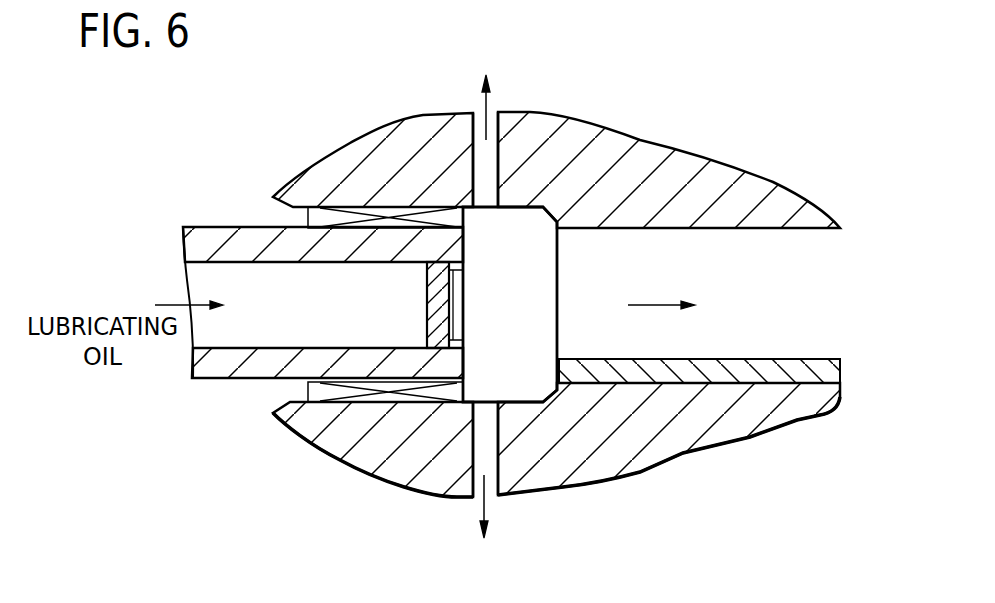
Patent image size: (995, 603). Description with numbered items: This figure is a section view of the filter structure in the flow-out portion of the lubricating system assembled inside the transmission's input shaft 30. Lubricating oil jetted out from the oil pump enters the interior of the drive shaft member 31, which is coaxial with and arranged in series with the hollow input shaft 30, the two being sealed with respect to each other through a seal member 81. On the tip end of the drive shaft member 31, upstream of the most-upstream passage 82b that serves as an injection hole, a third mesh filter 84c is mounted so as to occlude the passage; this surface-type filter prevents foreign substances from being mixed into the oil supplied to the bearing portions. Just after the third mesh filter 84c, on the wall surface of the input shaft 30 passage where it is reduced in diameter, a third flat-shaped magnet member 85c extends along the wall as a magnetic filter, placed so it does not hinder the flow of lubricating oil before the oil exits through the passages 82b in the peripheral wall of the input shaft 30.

The input shaft 30 is at (633, 147).
The drive shaft member 31 is at (243, 370).
The seal member 81 is at (385, 394).
The passage 82b is at (492, 122).
The third mesh filter 84c is at (440, 315).
The third flat-shaped magnet member 85c is at (785, 358).